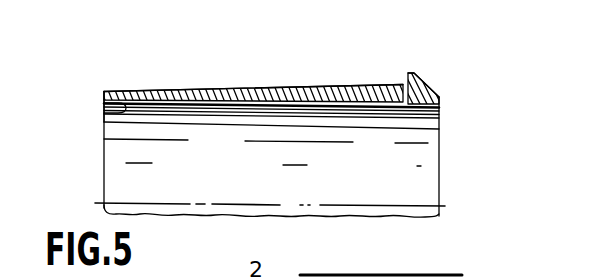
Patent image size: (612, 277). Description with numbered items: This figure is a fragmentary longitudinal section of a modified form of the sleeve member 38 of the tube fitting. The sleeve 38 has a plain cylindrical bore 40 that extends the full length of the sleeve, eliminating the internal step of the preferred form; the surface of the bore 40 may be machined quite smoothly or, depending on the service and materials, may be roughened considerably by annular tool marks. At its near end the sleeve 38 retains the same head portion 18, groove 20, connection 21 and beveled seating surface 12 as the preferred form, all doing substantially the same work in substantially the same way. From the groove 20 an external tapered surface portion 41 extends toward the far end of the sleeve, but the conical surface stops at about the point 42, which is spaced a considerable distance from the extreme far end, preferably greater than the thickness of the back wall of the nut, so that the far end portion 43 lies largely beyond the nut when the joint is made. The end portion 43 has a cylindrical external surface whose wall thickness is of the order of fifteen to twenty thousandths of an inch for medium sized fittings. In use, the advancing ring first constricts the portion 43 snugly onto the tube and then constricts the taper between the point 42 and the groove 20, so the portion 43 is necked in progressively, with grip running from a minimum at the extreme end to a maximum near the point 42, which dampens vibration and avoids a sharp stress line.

The beveled seating surface 12 is at (440, 89).
The head portion 18 is at (410, 73).
The groove 20 is at (401, 85).
The connection 21 is at (415, 111).
The sleeve member 38 is at (257, 90).
The plain cylindrical bore 40 is at (118, 122).
The external tapered surface portion 41 is at (327, 87).
The point 42 is at (195, 91).
The far end portion 43 is at (118, 90).